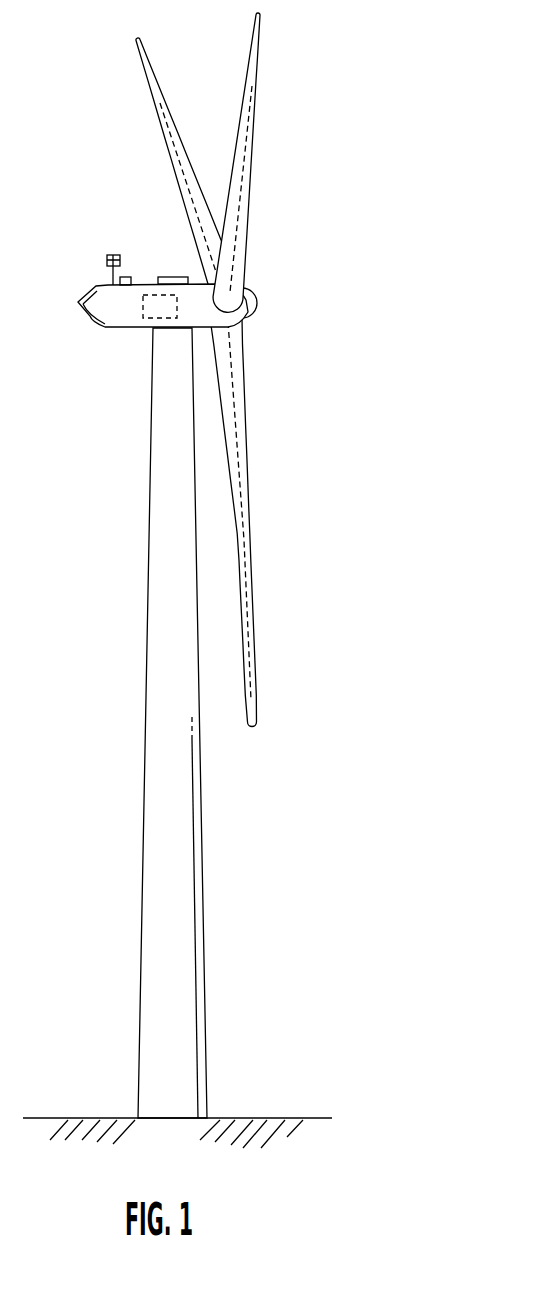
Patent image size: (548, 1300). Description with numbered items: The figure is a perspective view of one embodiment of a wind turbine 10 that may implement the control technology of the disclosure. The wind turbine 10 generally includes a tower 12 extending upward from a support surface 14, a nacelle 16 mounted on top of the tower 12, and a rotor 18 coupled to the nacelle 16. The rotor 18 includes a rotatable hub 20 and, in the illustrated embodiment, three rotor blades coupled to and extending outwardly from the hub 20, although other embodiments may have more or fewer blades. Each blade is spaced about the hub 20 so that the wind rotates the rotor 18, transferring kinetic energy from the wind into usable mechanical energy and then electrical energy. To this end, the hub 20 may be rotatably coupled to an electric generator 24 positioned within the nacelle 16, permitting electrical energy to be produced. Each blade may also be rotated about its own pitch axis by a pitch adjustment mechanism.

The wind turbine 10 is at (380, 90).
The tower 12 is at (158, 787).
The support surface 14 is at (97, 1118).
The nacelle 16 is at (150, 303).
The rotor 18 is at (200, 370).
The rotatable hub 20 is at (256, 310).
The electric generator 24 is at (143, 306).